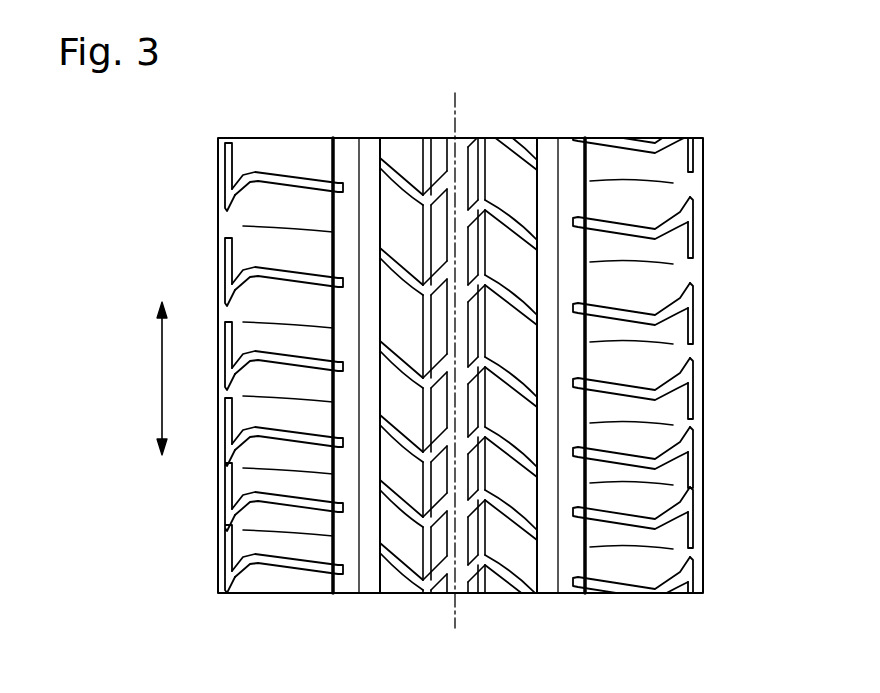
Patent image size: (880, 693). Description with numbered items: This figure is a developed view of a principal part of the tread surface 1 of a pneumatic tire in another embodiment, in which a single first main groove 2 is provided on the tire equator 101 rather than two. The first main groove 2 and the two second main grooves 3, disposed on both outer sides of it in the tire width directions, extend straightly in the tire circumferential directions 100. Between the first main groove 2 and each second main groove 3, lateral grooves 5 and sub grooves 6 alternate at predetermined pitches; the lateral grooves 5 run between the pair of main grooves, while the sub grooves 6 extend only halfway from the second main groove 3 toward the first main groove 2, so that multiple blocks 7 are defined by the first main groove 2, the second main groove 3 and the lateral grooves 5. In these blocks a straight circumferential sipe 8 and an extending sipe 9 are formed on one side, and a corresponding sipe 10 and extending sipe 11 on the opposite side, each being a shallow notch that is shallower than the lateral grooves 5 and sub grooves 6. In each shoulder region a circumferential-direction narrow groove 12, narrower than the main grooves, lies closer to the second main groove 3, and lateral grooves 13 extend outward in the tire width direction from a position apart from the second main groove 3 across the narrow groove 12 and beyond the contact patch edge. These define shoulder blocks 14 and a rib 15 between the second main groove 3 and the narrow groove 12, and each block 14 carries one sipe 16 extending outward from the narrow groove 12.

The tread surface 1 is at (528, 138).
The first main groove 2 is at (460, 583).
The second main groove 3 is at (367, 587).
The lateral groove 5 is at (403, 562).
The sub groove 6 is at (385, 500).
The block 7 is at (395, 150).
The sipe 8 is at (438, 150).
The extending sipe 9 is at (420, 212).
The sipe 10 is at (485, 138).
The extending sipe 11 is at (490, 263).
The circumferential-direction narrow groove 12 is at (335, 585).
The lateral groove 13 is at (250, 567).
The block 14 is at (248, 253).
The rib 15 is at (345, 150).
The sipe 16 is at (267, 227).
The tire circumferential direction 100 is at (134, 378).
The tire equator 101 is at (459, 340).